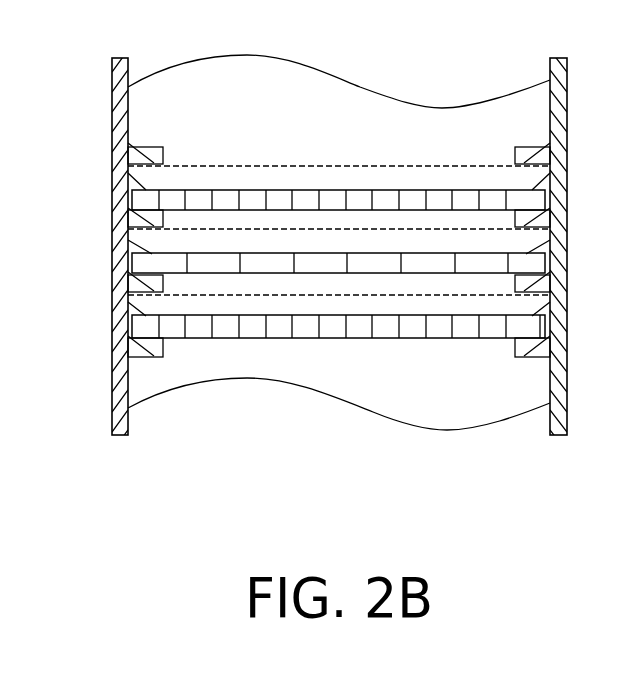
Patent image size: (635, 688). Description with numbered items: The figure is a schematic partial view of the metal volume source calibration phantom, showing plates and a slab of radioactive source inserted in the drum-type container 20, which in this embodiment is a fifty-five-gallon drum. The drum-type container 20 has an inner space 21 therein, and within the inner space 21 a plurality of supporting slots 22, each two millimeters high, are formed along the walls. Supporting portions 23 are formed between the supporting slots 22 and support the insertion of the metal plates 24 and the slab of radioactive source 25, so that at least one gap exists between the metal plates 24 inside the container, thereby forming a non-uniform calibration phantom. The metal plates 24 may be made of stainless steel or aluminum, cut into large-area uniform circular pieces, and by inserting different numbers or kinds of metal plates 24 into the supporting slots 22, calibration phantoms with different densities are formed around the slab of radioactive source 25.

The drum-type container 20 is at (113, 79).
The inner space 21 is at (345, 126).
The supporting slots 22 is at (372, 165).
The supporting portions 23 is at (113, 133).
The metal plates 24 is at (113, 182).
The slab of radioactive source 25 is at (113, 250).